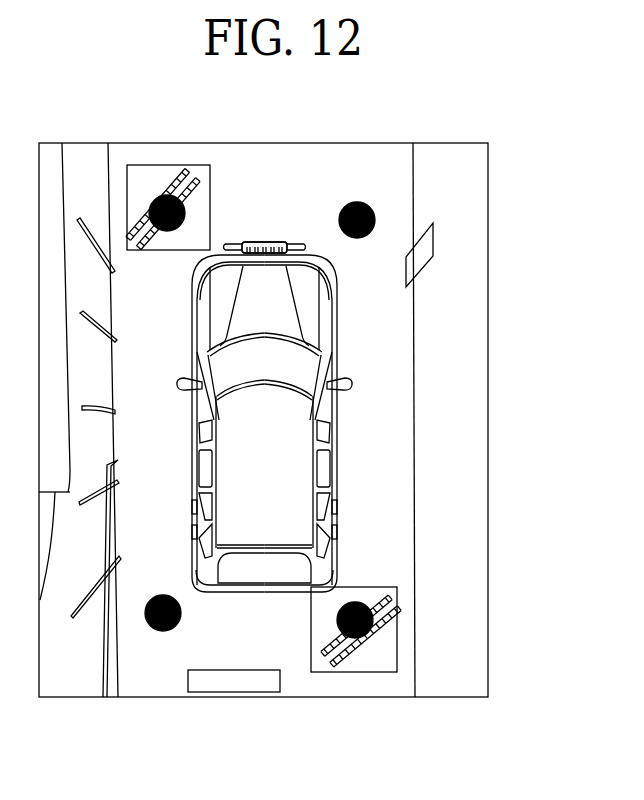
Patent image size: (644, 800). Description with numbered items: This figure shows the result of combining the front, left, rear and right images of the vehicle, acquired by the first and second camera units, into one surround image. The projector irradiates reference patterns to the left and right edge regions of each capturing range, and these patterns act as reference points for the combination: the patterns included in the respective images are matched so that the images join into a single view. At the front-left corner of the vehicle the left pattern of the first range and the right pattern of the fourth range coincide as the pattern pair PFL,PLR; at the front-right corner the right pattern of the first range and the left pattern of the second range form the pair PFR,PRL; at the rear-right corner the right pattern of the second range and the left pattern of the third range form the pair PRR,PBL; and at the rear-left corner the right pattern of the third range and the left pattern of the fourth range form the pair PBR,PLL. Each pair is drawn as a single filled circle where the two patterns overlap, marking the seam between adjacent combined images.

The left pattern of the first capturing range and right pattern of the fourth captur PFL,PLR is at (160, 197).
The right pattern of the first capturing range and left pattern of the second captur PFR,PRL is at (357, 202).
The right pattern of the third capturing range and left pattern of the fourth captur PBR,PLL is at (163, 632).
The right pattern of the second capturing range and left pattern of the third captur PRR,PBL is at (357, 637).